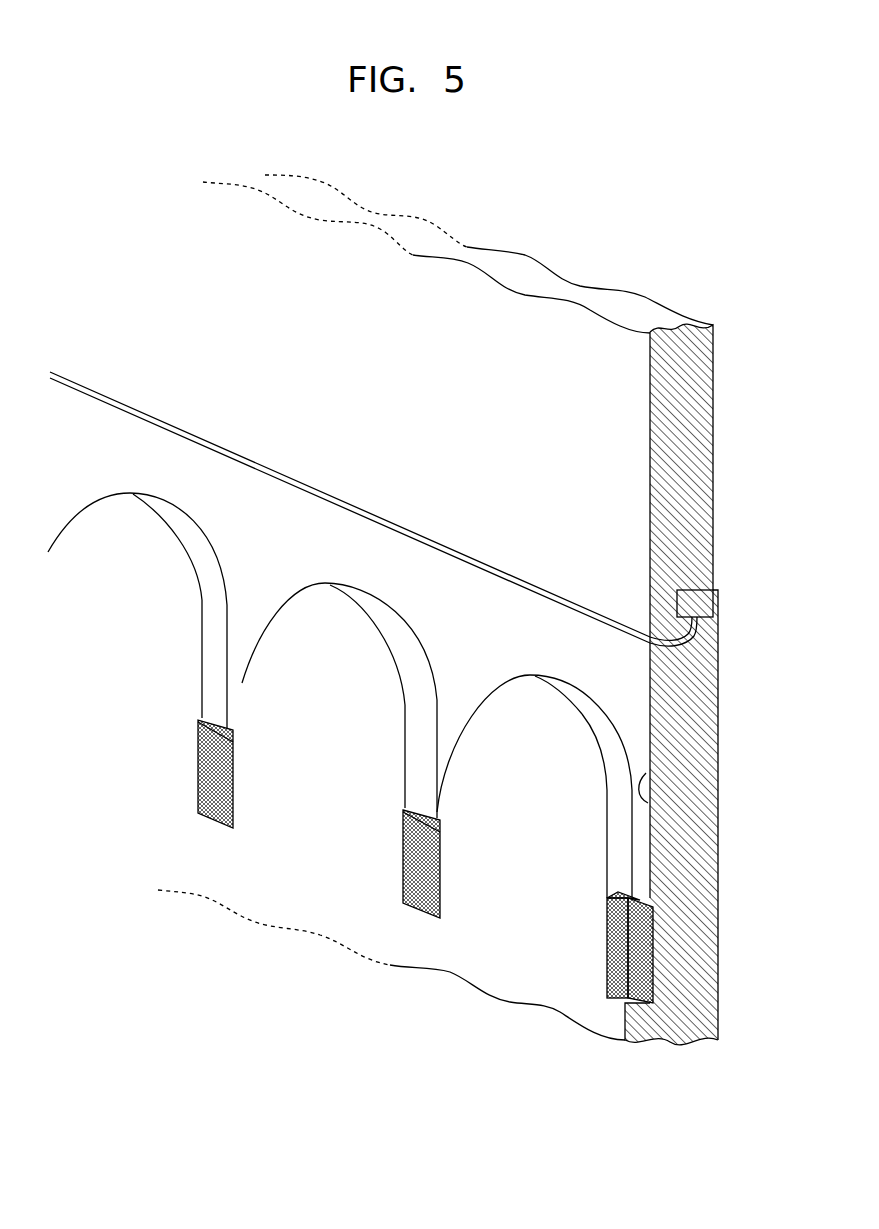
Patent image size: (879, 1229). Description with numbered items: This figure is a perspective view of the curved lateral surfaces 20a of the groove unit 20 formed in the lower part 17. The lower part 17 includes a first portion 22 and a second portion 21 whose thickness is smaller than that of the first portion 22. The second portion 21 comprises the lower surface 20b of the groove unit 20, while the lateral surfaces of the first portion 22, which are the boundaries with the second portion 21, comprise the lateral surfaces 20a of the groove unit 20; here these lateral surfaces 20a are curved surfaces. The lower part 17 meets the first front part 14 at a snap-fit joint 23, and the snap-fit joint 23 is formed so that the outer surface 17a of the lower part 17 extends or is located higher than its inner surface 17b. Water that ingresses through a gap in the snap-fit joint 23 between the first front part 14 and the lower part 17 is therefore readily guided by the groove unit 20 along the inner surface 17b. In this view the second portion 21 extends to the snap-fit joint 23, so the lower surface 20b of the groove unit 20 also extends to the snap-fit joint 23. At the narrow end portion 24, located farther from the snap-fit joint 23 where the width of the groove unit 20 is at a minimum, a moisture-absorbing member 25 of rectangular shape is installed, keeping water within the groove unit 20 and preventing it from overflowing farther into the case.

The first front part 14 is at (715, 463).
The lower part 17 is at (716, 800).
The outer surface of the lower part 17a is at (718, 688).
The inner surface of the lower part 17b is at (572, 622).
The groove unit 20 is at (615, 815).
The lateral surfaces of the groove unit 20a is at (604, 745).
The lower surface of the groove unit 20b is at (652, 790).
The second portion 21 is at (645, 720).
The first portion 22 is at (528, 675).
The snap-fit joint 23 is at (713, 589).
The narrow end portion 24 is at (605, 957).
The moisture-absorbing member 25 is at (605, 928).